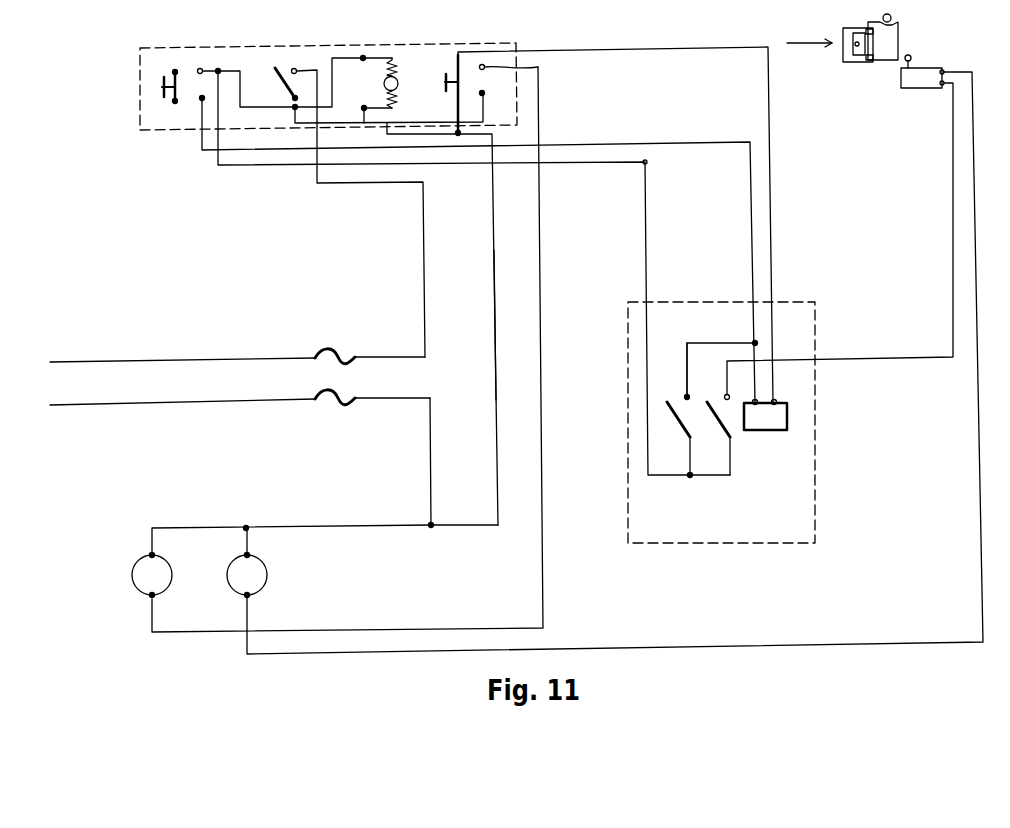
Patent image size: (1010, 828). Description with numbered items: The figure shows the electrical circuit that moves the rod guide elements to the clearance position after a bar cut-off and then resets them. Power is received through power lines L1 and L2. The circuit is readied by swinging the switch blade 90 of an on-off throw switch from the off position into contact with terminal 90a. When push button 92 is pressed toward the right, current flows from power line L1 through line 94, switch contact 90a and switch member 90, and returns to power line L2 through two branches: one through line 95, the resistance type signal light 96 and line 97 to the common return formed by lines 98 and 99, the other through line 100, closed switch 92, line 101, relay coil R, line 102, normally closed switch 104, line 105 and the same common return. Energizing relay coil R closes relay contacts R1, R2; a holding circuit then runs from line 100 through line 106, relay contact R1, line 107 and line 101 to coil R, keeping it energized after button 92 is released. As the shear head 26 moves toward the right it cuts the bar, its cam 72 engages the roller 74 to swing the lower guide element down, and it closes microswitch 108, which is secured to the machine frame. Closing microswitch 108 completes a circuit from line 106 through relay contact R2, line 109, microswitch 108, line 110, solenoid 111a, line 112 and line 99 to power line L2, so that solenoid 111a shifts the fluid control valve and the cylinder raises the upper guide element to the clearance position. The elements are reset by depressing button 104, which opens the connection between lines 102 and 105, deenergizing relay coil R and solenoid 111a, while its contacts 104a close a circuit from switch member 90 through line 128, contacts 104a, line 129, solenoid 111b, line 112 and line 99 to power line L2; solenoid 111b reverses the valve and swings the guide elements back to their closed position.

The push button 92 is at (173, 92).
The switch blade 90 is at (283, 82).
The switch contact 90a is at (296, 69).
The line 94 is at (423, 244).
The line 95 is at (334, 80).
The resistance type signal light 96 is at (398, 79).
The line 97 is at (406, 136).
The line 98 is at (497, 356).
The line 99 is at (432, 477).
The line 100 is at (248, 107).
The line 101 is at (253, 136).
The line 102 is at (771, 175).
The normally closed switch 104 is at (445, 85).
The switch contacts 104a is at (484, 93).
The line 105 is at (459, 112).
The line 106 is at (253, 165).
The line 107 is at (732, 343).
The microswitch 108 is at (923, 73).
The line 109 is at (880, 358).
The line 110 is at (770, 646).
The solenoid 111a is at (267, 583).
The solenoid 111b is at (172, 583).
The line 112 is at (352, 528).
The line 128 is at (387, 124).
The line 129 is at (541, 273).
The shear head 26 is at (892, 53).
The cam 72 is at (897, 22).
The roller 74 is at (882, 15).
The relay coil R is at (767, 430).
The relay contact R1 is at (676, 424).
The relay contact R2 is at (716, 424).
The power line L1 is at (97, 362).
The power line L2 is at (98, 405).